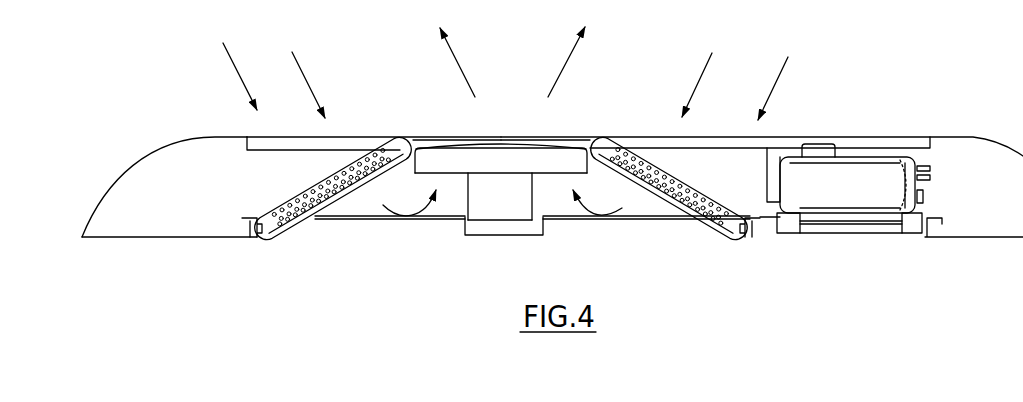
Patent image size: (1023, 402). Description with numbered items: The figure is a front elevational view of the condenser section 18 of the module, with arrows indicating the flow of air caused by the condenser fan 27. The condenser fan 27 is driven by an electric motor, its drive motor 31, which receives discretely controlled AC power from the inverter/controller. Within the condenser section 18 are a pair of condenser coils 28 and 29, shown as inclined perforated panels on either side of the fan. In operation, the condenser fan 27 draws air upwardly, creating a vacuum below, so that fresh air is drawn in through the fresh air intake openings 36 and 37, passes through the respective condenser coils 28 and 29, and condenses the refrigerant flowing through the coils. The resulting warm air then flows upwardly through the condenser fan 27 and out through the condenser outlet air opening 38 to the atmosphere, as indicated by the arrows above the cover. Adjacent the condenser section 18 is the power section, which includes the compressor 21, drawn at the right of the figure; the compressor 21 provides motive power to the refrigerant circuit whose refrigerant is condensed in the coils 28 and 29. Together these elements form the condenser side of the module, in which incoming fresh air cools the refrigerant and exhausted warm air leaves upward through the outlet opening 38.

The condenser section 18 is at (195, 249).
The compressor 21 is at (863, 182).
The condenser fan 27 is at (462, 163).
The condenser coil 28 is at (672, 187).
The condenser coil 29 is at (307, 203).
The drive motor 31 is at (507, 208).
The fresh air intake opening 36 is at (708, 136).
The fresh air intake opening 37 is at (338, 136).
The condenser outlet air opening 38 is at (542, 136).